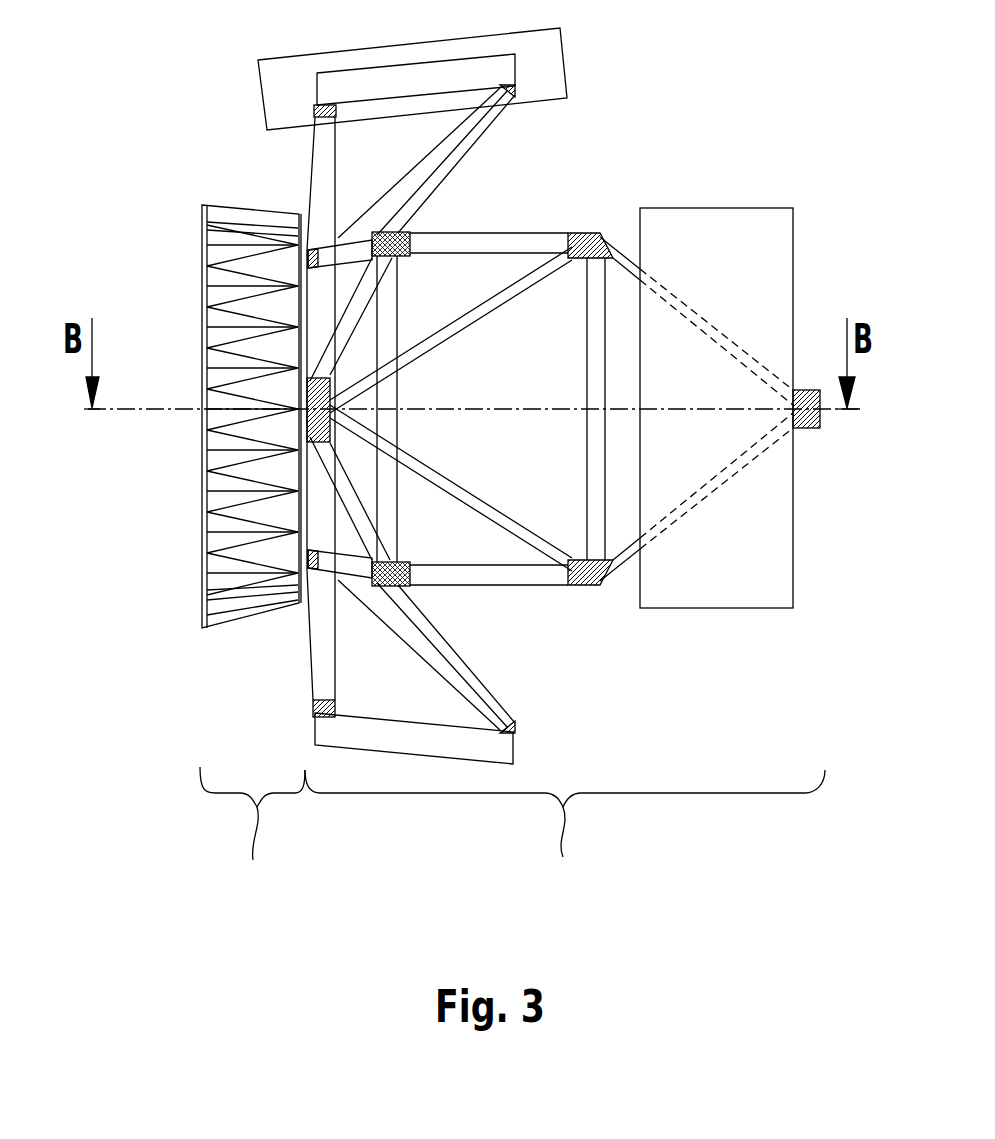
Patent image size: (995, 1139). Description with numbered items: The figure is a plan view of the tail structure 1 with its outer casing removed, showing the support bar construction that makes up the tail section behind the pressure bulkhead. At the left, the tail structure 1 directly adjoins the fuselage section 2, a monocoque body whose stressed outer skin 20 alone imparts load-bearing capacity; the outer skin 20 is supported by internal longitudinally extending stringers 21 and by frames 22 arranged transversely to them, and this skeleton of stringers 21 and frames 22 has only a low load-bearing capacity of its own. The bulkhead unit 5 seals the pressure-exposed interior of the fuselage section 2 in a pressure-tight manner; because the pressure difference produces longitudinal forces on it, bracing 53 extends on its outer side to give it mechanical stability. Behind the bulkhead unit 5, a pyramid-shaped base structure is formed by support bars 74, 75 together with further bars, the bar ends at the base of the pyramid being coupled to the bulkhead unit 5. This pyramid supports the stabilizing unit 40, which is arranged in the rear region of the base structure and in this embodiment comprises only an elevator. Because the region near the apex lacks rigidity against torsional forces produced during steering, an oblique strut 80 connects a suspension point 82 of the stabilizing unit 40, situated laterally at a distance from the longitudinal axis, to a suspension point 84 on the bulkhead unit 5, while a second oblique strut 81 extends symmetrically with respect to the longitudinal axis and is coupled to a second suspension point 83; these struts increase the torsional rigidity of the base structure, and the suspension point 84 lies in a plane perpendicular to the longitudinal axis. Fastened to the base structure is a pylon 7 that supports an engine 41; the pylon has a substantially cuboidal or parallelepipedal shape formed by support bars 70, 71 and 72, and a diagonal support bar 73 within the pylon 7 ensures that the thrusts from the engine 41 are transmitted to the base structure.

The tail structure 1 is at (565, 832).
The fuselage section 2 is at (252, 831).
The bulkhead unit 5 is at (283, 478).
The pylon 7 is at (445, 379).
The outer skin 20 is at (210, 272).
The stringer 21 is at (213, 392).
The frame 22 is at (205, 215).
The stabilizing unit 40 is at (773, 257).
The engine 41 is at (552, 70).
The bracing 53 is at (300, 315).
The support bar 70 is at (430, 190).
The support bar 71 is at (330, 87).
The support bar 72 is at (320, 182).
The diagonal support bar 73 is at (418, 167).
The support bar 74 is at (515, 573).
The support bar 75 is at (537, 247).
The oblique strut 80 is at (480, 500).
The upper diagonal strut 81 is at (483, 313).
The suspension point 82 is at (597, 583).
The second suspension point 83 is at (598, 233).
The suspension point 84 is at (330, 403).